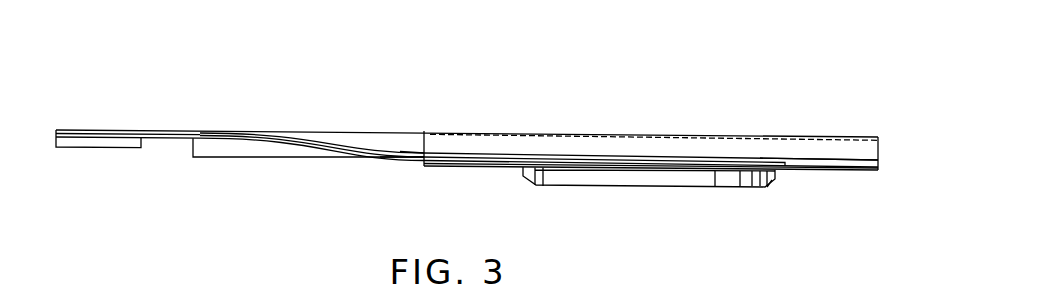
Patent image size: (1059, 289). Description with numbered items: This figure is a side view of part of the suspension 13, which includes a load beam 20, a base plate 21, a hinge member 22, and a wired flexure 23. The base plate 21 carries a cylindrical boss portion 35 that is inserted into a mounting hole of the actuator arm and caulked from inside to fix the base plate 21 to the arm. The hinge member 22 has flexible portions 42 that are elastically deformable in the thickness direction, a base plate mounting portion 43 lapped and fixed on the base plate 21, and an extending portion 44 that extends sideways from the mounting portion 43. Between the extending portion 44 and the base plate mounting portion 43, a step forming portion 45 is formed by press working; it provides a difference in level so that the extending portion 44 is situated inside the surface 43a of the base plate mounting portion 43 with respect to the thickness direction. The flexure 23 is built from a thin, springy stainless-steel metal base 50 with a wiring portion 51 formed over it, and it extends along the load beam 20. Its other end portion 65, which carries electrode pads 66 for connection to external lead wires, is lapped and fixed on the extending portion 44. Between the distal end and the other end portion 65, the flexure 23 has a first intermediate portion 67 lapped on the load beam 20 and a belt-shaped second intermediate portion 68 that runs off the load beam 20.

The suspension 13 is at (249, 114).
The load beam 20 is at (99, 149).
The base plate 21 is at (240, 159).
The hinge member 22 is at (483, 132).
The wired flexure 23 is at (412, 153).
The boss portion 35 is at (650, 189).
The flexible portions 42 is at (165, 131).
The base plate mounting portion 43 is at (593, 133).
The surface of the base plate mounting portion 43a is at (523, 136).
The extending portion 44 is at (818, 172).
The step forming portion 45 is at (795, 147).
The metal base 50 is at (390, 159).
The wiring portion 51 is at (437, 146).
The other end portion 65 is at (841, 165).
The electrode pads 66 is at (703, 156).
The first intermediate portion 67 is at (79, 129).
The second intermediate portion 68 is at (300, 147).